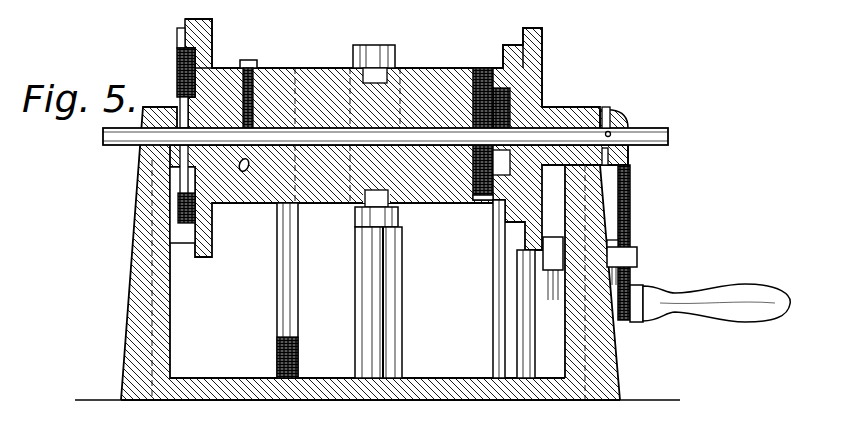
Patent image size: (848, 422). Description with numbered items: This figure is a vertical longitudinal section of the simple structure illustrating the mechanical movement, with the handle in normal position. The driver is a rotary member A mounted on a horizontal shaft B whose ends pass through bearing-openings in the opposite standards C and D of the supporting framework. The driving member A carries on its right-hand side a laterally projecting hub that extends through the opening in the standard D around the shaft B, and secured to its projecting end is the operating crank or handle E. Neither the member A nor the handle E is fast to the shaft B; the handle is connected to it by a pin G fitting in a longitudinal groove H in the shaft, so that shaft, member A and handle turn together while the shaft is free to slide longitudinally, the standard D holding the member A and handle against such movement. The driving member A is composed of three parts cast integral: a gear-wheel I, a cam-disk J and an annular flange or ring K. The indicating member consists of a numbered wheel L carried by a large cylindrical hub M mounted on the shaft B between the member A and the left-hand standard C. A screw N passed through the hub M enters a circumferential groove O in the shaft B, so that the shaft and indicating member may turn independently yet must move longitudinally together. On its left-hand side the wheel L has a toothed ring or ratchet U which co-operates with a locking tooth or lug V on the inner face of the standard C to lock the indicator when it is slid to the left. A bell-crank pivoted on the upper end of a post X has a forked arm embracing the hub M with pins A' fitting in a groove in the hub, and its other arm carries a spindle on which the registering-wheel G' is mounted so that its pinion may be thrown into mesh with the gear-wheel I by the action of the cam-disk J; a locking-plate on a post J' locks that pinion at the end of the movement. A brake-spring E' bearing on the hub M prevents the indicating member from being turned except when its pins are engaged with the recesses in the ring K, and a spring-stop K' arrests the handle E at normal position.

The rotary driving member A is at (392, 73).
The pins A' is at (397, 134).
The horizontal shaft B is at (650, 128).
The left-hand standard C is at (136, 263).
The right-hand standard D is at (614, 360).
The operating crank or handle E is at (635, 242).
The brake-spring E' is at (300, 290).
The pin G is at (625, 118).
The registering-wheel G' is at (483, 120).
The longitudinal groove H is at (630, 152).
The gear-wheel I is at (510, 49).
The cam-disk J is at (543, 67).
The post J' is at (496, 289).
The annular flange or ring K is at (479, 217).
The spring-stop K' is at (613, 266).
The numbered wheel L is at (213, 26).
The cylindrical hub M is at (318, 67).
The screw N is at (249, 60).
The circumferential groove O is at (244, 164).
The toothed ring or ratchet U is at (177, 40).
The locking tooth or lug V is at (176, 245).
The post X is at (402, 278).